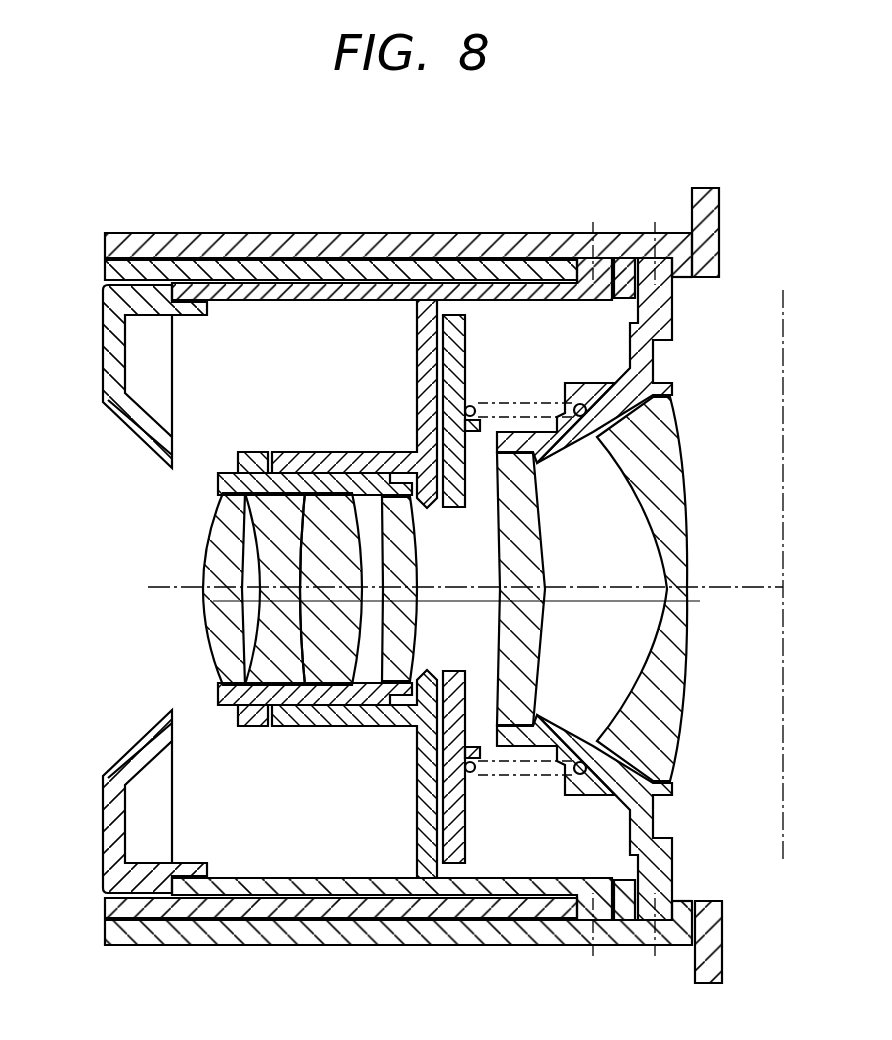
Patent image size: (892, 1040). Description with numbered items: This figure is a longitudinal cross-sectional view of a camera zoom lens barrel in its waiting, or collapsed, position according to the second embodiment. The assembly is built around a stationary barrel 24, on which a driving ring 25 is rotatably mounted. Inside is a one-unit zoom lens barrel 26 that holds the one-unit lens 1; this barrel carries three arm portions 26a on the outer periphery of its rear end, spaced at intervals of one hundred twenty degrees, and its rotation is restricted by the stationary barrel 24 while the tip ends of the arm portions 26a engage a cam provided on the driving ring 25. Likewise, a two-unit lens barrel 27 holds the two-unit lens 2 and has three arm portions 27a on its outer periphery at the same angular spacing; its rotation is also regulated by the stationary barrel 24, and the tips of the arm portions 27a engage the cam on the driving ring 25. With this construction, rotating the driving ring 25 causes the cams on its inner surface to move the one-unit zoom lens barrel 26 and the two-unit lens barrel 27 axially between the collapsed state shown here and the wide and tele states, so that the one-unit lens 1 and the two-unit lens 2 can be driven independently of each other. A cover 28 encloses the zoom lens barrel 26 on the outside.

The one-unit lens 1 is at (310, 589).
The two-unit lens 2 is at (592, 589).
The stationary barrel 24 is at (722, 206).
The driving ring 25 is at (513, 244).
The one-unit zoom lens barrel 26 is at (405, 298).
The arm portions 26a is at (600, 240).
The two-unit lens barrel 27 is at (657, 353).
The arm portions 27a is at (681, 283).
The cover 28 is at (112, 358).